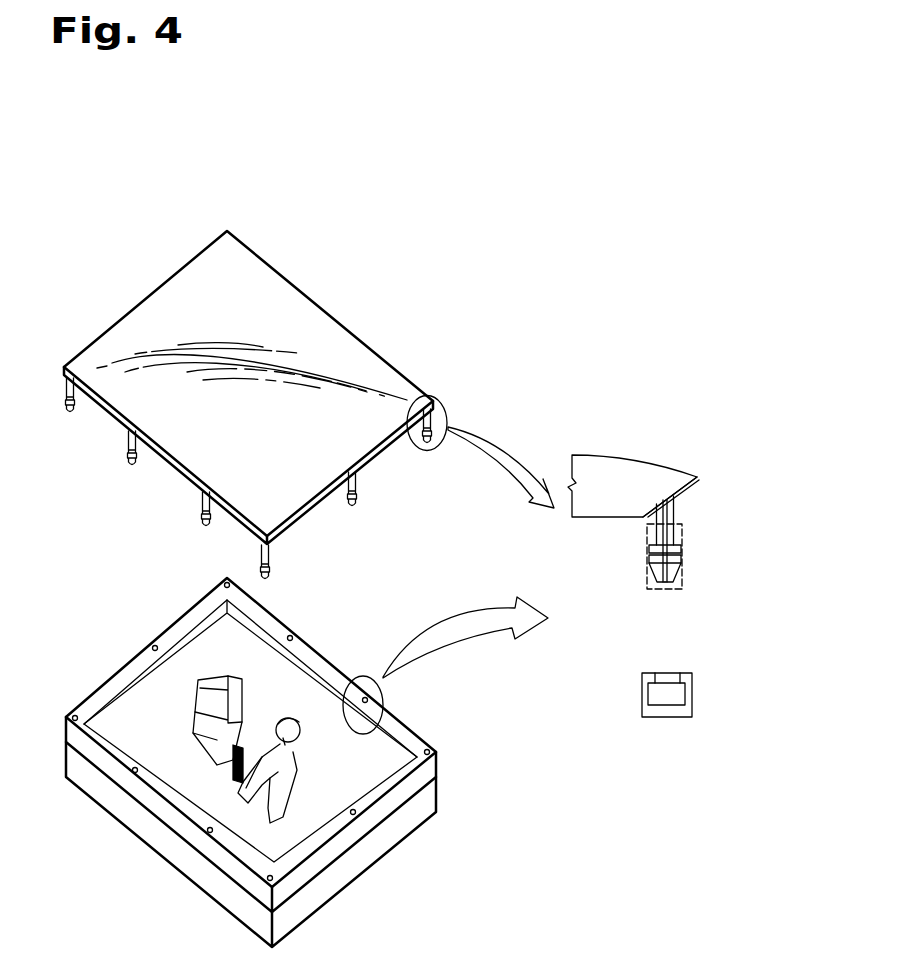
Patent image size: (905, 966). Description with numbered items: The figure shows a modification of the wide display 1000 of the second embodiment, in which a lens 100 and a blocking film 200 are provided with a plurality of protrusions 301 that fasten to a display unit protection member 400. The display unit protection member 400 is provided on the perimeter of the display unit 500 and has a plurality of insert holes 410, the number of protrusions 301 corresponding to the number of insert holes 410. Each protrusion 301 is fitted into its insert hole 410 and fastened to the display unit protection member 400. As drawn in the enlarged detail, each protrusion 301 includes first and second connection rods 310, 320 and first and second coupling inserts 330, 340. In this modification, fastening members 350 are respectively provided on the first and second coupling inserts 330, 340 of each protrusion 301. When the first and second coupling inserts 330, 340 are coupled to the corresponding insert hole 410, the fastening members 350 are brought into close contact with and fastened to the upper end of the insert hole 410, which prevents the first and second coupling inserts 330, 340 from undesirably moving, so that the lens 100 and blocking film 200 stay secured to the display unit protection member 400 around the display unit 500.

The wide display 1000 is at (157, 145).
The lens 100 is at (333, 339).
The blocking film 200 is at (667, 487).
The protrusion 301 is at (648, 565).
The first connection rod 310 is at (656, 532).
The second connection rod 320 is at (675, 538).
The first coupling insert 330 is at (652, 574).
The second coupling insert 340 is at (679, 572).
The fastening member 350 is at (683, 558).
The display unit protection member 400 is at (415, 733).
The insert hole 410 is at (642, 715).
The display unit 500 is at (432, 793).